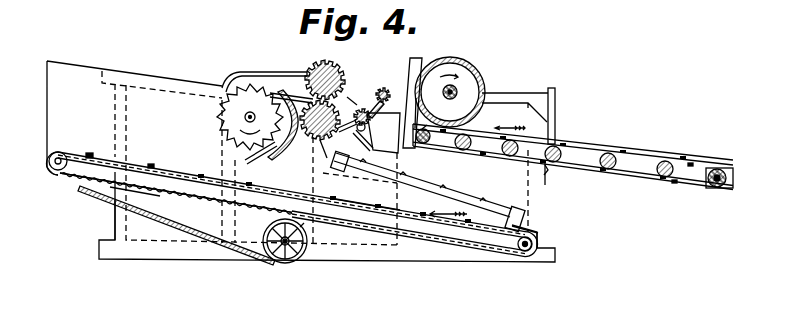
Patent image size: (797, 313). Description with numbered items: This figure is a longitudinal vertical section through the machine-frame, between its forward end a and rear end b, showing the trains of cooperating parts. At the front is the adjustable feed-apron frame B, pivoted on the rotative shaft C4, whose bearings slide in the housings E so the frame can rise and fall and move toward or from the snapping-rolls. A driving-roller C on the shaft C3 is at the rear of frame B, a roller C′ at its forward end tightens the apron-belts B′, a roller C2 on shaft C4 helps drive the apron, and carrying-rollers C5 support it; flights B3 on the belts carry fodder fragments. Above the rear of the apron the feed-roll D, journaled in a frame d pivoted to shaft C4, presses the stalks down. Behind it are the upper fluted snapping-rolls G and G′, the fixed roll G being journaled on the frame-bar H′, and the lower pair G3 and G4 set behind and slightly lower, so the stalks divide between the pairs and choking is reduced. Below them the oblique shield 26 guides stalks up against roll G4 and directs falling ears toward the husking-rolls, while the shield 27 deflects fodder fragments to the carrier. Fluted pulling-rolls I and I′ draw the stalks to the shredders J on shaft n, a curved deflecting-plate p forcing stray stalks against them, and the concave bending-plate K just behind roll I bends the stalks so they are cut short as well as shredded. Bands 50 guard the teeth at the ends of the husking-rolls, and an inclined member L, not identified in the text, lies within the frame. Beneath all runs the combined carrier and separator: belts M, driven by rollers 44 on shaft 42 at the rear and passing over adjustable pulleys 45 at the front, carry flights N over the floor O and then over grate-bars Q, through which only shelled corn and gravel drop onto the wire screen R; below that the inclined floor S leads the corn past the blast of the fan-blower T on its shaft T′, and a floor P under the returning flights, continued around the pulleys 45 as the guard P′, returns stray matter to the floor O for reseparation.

The forward end of the frame a is at (560, 255).
The rear end of the frame b is at (110, 224).
The floor P is at (375, 225).
The floor O is at (360, 215).
The grate-bars Q is at (189, 185).
The wire screen R is at (148, 190).
The flights N is at (158, 167).
The belts M is at (88, 153).
The rollers 44 is at (48, 151).
The shaft 42 is at (54, 170).
The pulleys 45 is at (515, 255).
The guard P′ is at (541, 236).
The fan-blower T is at (292, 259).
The shaft of the fan-blower T′ is at (306, 243).
The inclined floor S is at (83, 196).
The shredders J is at (219, 124).
The shaft n is at (245, 117).
The curved deflecting-plate p is at (244, 72).
The pulling-roll I is at (317, 136).
The pulling-roll I′ is at (316, 70).
The snapping-roll G is at (362, 109).
The snapping-roll G′ is at (383, 88).
The snapping-roll G3 is at (357, 116).
The snapping-roll G4 is at (347, 97).
The deflecting shield 26 is at (376, 133).
The frame-bar H′ is at (412, 60).
The feed-roll D is at (462, 62).
The frame d is at (510, 93).
The driving-roller C is at (455, 148).
The shaft C3 is at (422, 144).
The carrying-rollers C5 is at (612, 170).
The roller C2 is at (560, 146).
The rotative shaft C4 is at (555, 165).
The housings E is at (560, 190).
The apron-belts B′ is at (645, 153).
The flights B3 is at (676, 160).
The feed-apron frame B is at (720, 168).
The roller C′ is at (712, 186).
The inclined chute L is at (474, 194).
The deflecting shield 27 is at (333, 158).
The bands 50 is at (346, 172).
The bending-plate K is at (280, 158).